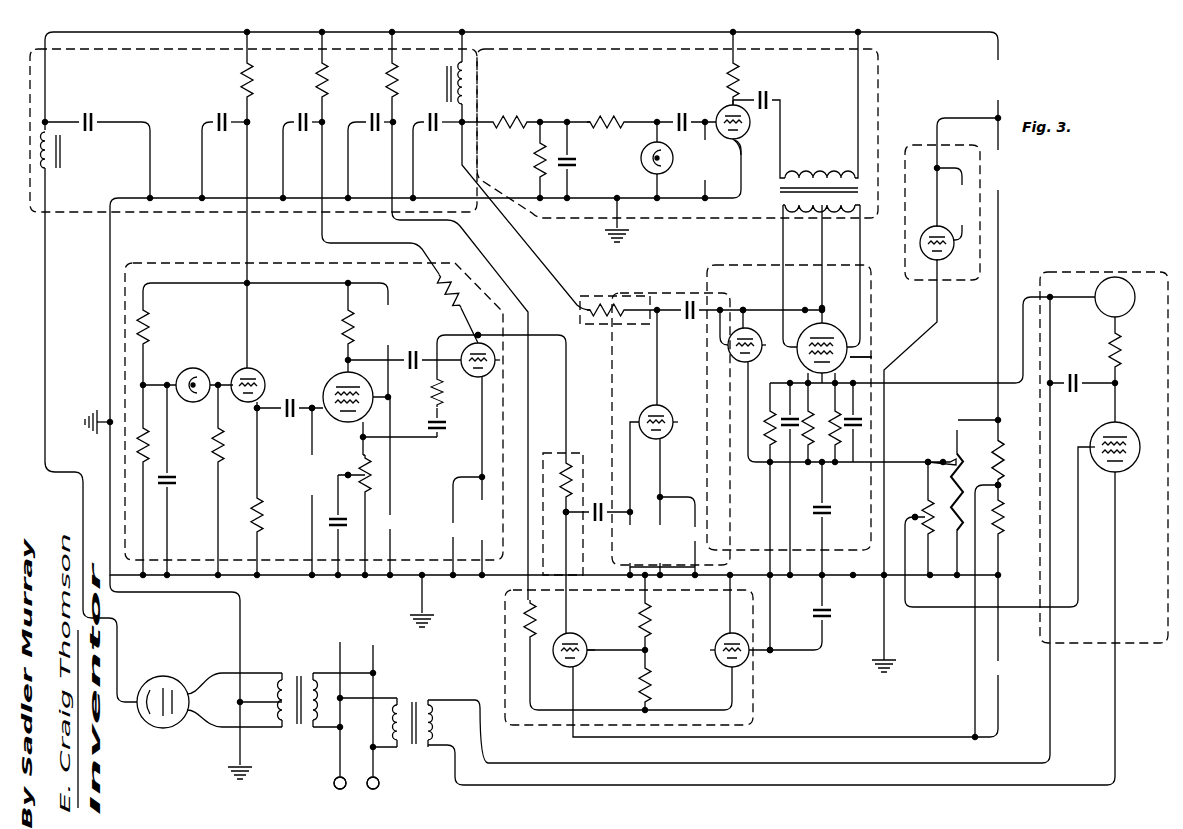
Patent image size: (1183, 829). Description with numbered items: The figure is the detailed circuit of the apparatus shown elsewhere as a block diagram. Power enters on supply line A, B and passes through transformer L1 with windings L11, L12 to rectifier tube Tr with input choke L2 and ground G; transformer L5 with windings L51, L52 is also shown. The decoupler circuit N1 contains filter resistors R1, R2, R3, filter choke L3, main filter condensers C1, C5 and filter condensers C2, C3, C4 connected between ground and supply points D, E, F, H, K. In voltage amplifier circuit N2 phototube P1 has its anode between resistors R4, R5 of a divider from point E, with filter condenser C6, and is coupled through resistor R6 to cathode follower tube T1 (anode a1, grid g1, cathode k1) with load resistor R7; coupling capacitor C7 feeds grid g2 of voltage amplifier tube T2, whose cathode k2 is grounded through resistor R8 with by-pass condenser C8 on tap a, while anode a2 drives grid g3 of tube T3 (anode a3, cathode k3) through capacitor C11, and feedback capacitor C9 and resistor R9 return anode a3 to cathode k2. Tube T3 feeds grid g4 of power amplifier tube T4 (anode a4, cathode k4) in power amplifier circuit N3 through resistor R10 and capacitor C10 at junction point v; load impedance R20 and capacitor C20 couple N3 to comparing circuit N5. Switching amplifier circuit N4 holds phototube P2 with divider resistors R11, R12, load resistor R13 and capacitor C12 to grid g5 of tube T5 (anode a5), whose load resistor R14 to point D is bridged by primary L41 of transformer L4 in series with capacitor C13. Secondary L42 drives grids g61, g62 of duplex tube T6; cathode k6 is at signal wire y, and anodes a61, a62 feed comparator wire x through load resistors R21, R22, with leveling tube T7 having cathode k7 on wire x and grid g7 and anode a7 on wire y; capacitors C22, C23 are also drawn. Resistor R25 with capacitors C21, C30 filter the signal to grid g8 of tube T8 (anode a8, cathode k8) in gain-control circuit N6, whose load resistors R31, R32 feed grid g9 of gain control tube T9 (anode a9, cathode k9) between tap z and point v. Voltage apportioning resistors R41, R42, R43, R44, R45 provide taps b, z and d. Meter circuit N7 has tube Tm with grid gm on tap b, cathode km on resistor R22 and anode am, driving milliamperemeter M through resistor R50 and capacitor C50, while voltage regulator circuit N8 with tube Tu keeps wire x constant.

The decoupler circuit N1 is at (30, 72).
The voltage amplifier circuit N2 is at (199, 264).
The power amplifier circuit N3 is at (611, 405).
The switching amplifier circuit N4 is at (550, 49).
The signal rectifying and comparing circuit N5 is at (723, 272).
The gain-control circuit N6 is at (505, 610).
The meter circuit N7 is at (1107, 277).
The voltage regulator circuit N8 is at (912, 144).
The supply point D is at (48, 120).
The supply point E is at (249, 125).
The supply point F is at (326, 123).
The supply point H is at (50, 272).
The supply point K is at (460, 128).
The main filter condenser C1 is at (93, 131).
The filter condenser C2 is at (219, 116).
The filter condenser C3 is at (303, 112).
The filter condenser C4 is at (375, 112).
The main filter condenser C5 is at (432, 131).
The filter condenser C6 is at (171, 486).
The coupling capacitor C7 is at (300, 394).
The by-pass condenser C8 is at (335, 524).
The degenerative feedback capacitor C9 is at (441, 433).
The coupling capacitor C10 is at (587, 510).
The capacitor C11 is at (571, 162).
The capacitor C12 is at (678, 114).
The capacitor C13 is at (780, 90).
The coupling capacitor C20 is at (686, 305).
The filter capacitor C21 is at (789, 480).
The capacitor C22 is at (859, 426).
The capacitor C23 is at (821, 517).
The filter capacitor C30 is at (825, 640).
The capacitor C50 is at (1072, 392).
The filter resistor R1 is at (244, 88).
The filter resistor R2 is at (320, 78).
The filter resistor R3 is at (391, 78).
The voltage divider resistor R4 is at (148, 322).
The voltage divider resistor R5 is at (152, 430).
The load resistor R6 is at (214, 452).
The load resistor R7 is at (264, 522).
The cathode resistor R8 is at (369, 473).
The feedback resistor R9 is at (431, 401).
The control resistor R10 is at (571, 472).
The voltage divider resistor R11 is at (512, 115).
The voltage divider resistor R12 is at (534, 160).
The load resistor R13 is at (605, 115).
The load resistor R14 is at (738, 62).
The transmitting load impedance R20 is at (622, 298).
The load resistor R21 is at (808, 455).
The load resistor R22 is at (836, 456).
The filter resistor R25 is at (769, 450).
The load resistor R31 is at (652, 622).
The load resistor R32 is at (652, 690).
The voltage apportioning resistor R41 is at (931, 504).
The voltage apportioning resistor R42 is at (955, 550).
The voltage divider R43 is at (960, 452).
The voltage apportioning resistor R44 is at (1002, 460).
The voltage apportioning resistor R45 is at (1001, 534).
The resistor R50 is at (1120, 356).
The transformer L1 is at (298, 728).
The input choke L2 is at (60, 172).
The filter choke L3 is at (457, 66).
The transformer L4 is at (777, 195).
The primary L41 is at (831, 172).
The secondary L42 is at (866, 214).
The transformer L5 is at (412, 748).
The primary winding L51 is at (396, 700).
The secondary L52 is at (432, 700).
The winding L11 is at (313, 672).
The winding L12 is at (283, 672).
The phototube P1 is at (184, 367).
The phototube P2 is at (644, 166).
The cathode follower tube T1 is at (240, 372).
The voltage amplifier tube T2 is at (331, 422).
The tube T3 is at (468, 340).
The power amplifier tube T4 is at (645, 410).
The amplifier tube T5 is at (719, 114).
The duplex tube T6 is at (811, 330).
The leveling tube T7 is at (738, 358).
The amplifier tube T8 is at (744, 680).
The gain control tube T9 is at (562, 634).
The rectifier tube Tr is at (160, 680).
The tube Tu is at (921, 250).
The meter tube Tm is at (1101, 482).
The anode of T1 a1 is at (252, 367).
The grid of T1 g1 is at (263, 376).
The cathode of T1 k1 is at (248, 402).
The anode a2 is at (345, 380).
The grid g2 is at (307, 401).
The cathode k2 is at (360, 430).
The anode a3 is at (486, 334).
The grid g3 is at (500, 360).
The cathode of T3 k3 is at (478, 381).
The anode of T4 a4 is at (659, 405).
The grid g4 is at (678, 422).
The cathode of T4 k4 is at (658, 444).
The anode of T5 a5 is at (729, 104).
The grid g5 is at (760, 130).
The anode a7 is at (748, 330).
The grid g7 is at (762, 352).
The cathode k7 is at (746, 374).
The cathode k6 is at (824, 338).
The grid g61 is at (845, 340).
The grid g62 is at (845, 347).
The anode a61 is at (845, 356).
The anode a62 is at (874, 359).
The anode of T8 a8 is at (727, 667).
The grid g8 is at (714, 651).
The cathode of T8 k8 is at (731, 633).
The anode of T9 a9 is at (571, 635).
The grid g9 is at (590, 655).
The cathode of T9 k9 is at (569, 668).
The cathode km is at (1120, 430).
The grid gm is at (1090, 447).
The anode of Tm am is at (1118, 467).
The tap a is at (347, 472).
The tap b is at (909, 517).
The tap d is at (942, 455).
The comparator wire x is at (924, 461).
The signal input wire y is at (770, 306).
The tap z is at (1003, 485).
The junction point v is at (565, 514).
The milliamperemeter M is at (1115, 297).
The ground connection G is at (238, 761).
The supply line A is at (334, 787).
The supply line B is at (380, 784).